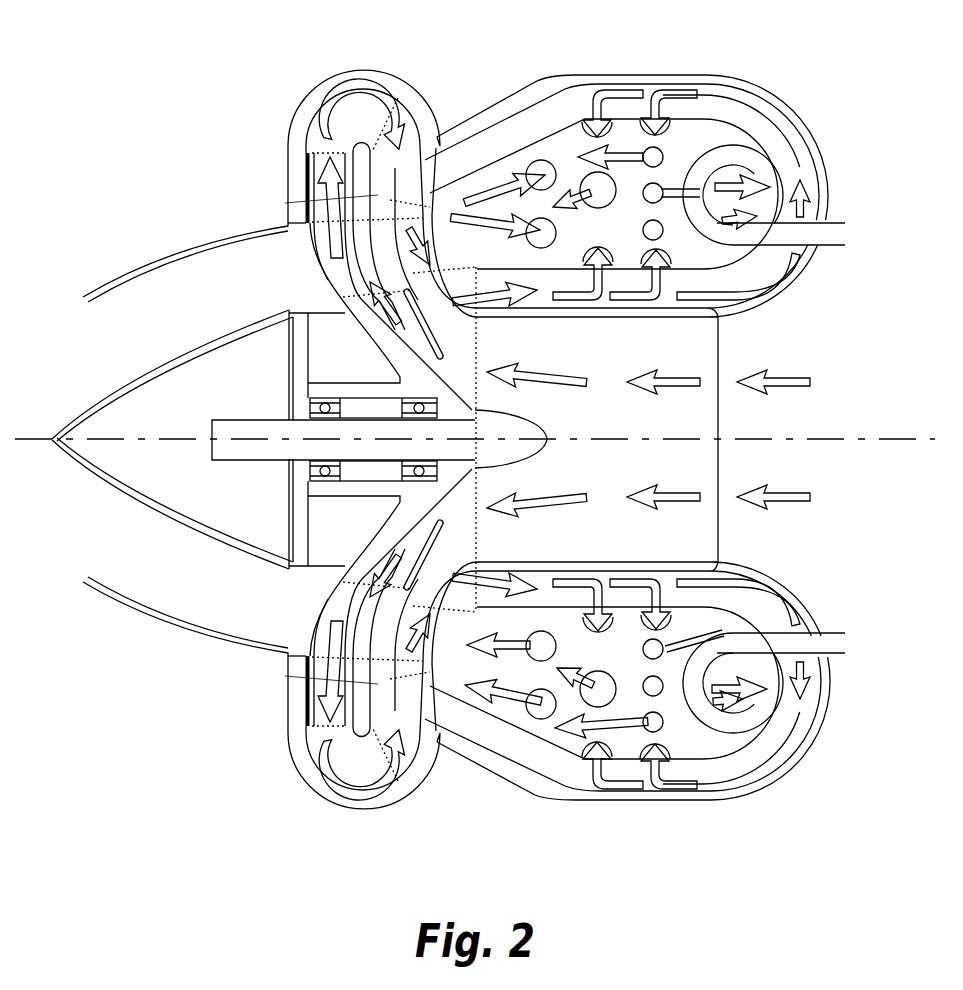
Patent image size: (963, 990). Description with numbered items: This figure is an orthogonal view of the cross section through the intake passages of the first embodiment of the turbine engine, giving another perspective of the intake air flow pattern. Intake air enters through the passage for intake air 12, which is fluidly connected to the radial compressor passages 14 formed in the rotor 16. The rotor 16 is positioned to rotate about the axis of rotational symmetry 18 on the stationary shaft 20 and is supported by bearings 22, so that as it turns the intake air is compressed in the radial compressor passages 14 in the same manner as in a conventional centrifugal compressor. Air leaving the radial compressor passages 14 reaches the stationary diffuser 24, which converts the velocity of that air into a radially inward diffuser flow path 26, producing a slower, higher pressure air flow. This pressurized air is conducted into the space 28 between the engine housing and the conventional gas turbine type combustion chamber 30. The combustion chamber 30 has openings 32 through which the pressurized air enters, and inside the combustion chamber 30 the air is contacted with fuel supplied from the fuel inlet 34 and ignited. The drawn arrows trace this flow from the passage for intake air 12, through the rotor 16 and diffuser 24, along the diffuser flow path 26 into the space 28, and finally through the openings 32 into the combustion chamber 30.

The passage for intake air 12 is at (594, 425).
The radial compressor passages 14 is at (467, 382).
The rotor 16 is at (372, 343).
The axis of rotational symmetry 18 is at (772, 440).
The stationary shaft 20 is at (263, 441).
The bearings 22 is at (327, 475).
The stationary diffuser 24 is at (417, 803).
The radially inward diffuser flow path 26 is at (305, 199).
The space 28 is at (540, 130).
The combustion chamber 30 is at (620, 244).
The openings 32 is at (579, 138).
The fuel inlet 34 is at (752, 175).